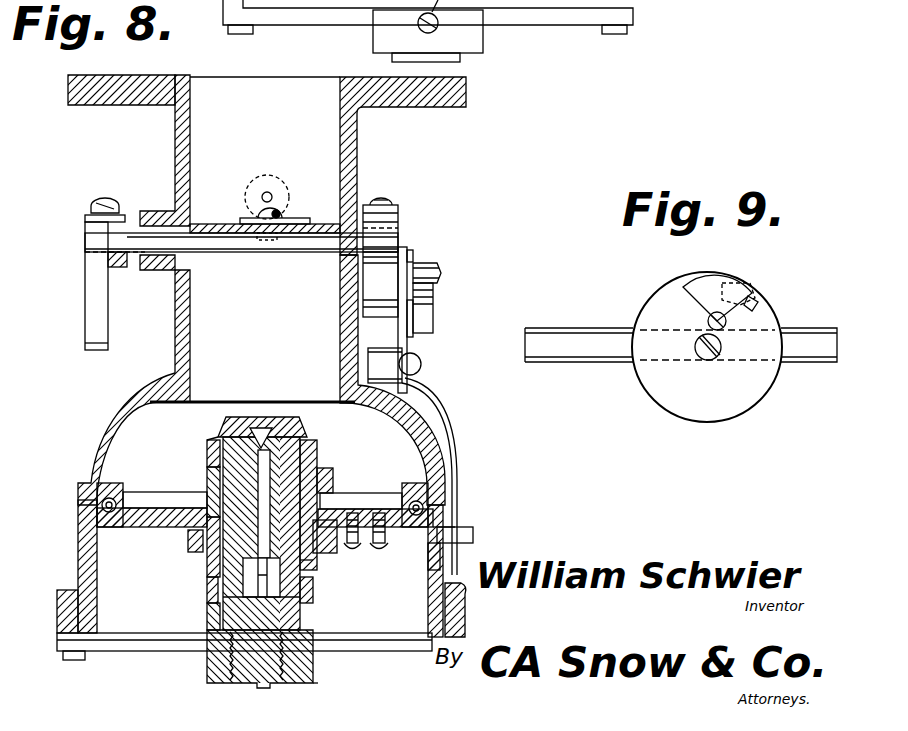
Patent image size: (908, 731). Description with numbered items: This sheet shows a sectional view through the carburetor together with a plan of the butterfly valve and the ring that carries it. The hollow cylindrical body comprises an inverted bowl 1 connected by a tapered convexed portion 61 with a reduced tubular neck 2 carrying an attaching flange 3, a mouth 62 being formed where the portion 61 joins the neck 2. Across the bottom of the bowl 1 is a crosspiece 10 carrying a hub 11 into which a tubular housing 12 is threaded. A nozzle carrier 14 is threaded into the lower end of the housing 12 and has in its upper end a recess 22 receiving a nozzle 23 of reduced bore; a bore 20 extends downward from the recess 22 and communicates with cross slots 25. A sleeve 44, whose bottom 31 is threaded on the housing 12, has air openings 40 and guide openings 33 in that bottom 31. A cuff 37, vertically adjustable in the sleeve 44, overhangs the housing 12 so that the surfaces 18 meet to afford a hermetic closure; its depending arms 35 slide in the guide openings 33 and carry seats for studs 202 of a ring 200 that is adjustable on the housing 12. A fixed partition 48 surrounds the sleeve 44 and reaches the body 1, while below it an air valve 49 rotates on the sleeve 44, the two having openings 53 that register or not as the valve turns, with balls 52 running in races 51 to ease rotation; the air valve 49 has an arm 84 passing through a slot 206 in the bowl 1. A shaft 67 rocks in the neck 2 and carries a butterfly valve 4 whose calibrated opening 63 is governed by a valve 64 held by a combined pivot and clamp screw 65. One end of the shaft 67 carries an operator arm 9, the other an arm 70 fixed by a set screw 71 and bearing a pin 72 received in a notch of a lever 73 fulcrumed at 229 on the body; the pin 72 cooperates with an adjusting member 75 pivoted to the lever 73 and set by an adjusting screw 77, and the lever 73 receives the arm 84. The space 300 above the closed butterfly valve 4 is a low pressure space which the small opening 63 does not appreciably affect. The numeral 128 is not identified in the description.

In FIG. 8, the inverted bowl 1 is at (82, 548).
In FIG. 8, the tubular neck 2 is at (178, 128).
In FIG. 8, the attaching flange 3 is at (72, 92).
In FIG. 8, the butterfly valve 4 is at (205, 224).
In FIG. 9, the butterfly valve 4 is at (738, 403).
In FIG. 8, the arm 9 is at (92, 300).
In FIG. 8, the crosspiece 10 is at (115, 640).
In FIG. 8, the hub 11 is at (480, 40).
In FIG. 8, the tubular housing 12 is at (318, 446).
In FIG. 8, the nozzle carrier 14 is at (320, 476).
In FIG. 8, the hermetic closure surfaces 18 is at (212, 440).
In FIG. 8, the bore 20 is at (213, 456).
In FIG. 8, the recess 22 is at (300, 428).
In FIG. 8, the nozzle 23 is at (258, 430).
In FIG. 8, the cross slots 25 is at (243, 570).
In FIG. 8, the bottom of sleeve 31 is at (305, 560).
In FIG. 8, the guide openings 33 is at (210, 556).
In FIG. 8, the depending arms 35 is at (206, 590).
In FIG. 8, the cuff 37 is at (330, 458).
In FIG. 8, the openings 40 is at (190, 541).
In FIG. 8, the sleeve 44 is at (208, 482).
In FIG. 8, the partition 48 is at (447, 500).
In FIG. 8, the air valve 49 is at (458, 512).
In FIG. 8, the races 51 is at (108, 490).
In FIG. 8, the balls 52 is at (100, 503).
In FIG. 8, the openings 53 is at (145, 500).
In FIG. 8, the tapered convexed portion 61 is at (125, 418).
In FIG. 8, the mouth 62 is at (166, 393).
In FIG. 9, the calibrated opening 63 is at (760, 306).
In FIG. 8, the valve 64 is at (298, 218).
In FIG. 9, the valve 64 is at (712, 288).
In FIG. 8, the combined pivot and clamp screw 65 is at (280, 210).
In FIG. 9, the combined pivot and clamp screw 65 is at (726, 336).
In FIG. 8, the shaft 67 is at (229, 252).
In FIG. 9, the shaft 67 is at (591, 340).
In FIG. 8, the arm 70 is at (370, 295).
In FIG. 8, the set screw 71 is at (381, 197).
In FIG. 8, the pin or projection 72 is at (436, 291).
In FIG. 8, the lever 73 is at (432, 408).
In FIG. 8, the adjusting member 75 is at (405, 258).
In FIG. 8, the adjusting screw 77 is at (440, 268).
In FIG. 8, the arm 84 is at (473, 530).
In FIG. 8, the dashed circle part 128 is at (260, 186).
In FIG. 8, the ring 200 is at (207, 617).
In FIG. 8, the studs 202 is at (200, 590).
In FIG. 8, the slot 206 is at (443, 583).
In FIG. 8, the fulcrum 229 is at (420, 360).
In FIG. 8, the space 300 is at (299, 90).